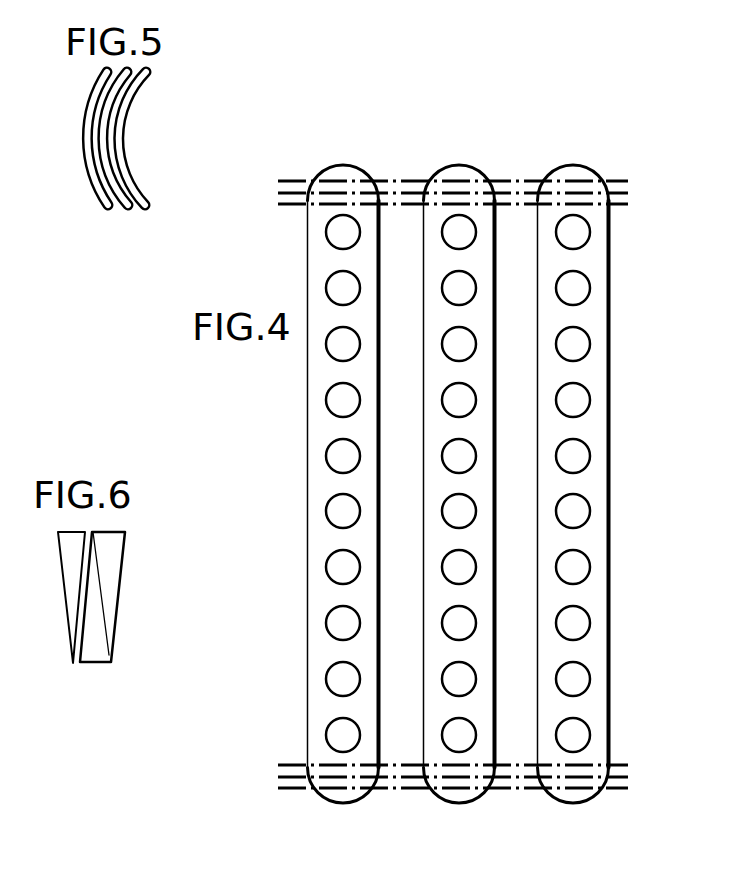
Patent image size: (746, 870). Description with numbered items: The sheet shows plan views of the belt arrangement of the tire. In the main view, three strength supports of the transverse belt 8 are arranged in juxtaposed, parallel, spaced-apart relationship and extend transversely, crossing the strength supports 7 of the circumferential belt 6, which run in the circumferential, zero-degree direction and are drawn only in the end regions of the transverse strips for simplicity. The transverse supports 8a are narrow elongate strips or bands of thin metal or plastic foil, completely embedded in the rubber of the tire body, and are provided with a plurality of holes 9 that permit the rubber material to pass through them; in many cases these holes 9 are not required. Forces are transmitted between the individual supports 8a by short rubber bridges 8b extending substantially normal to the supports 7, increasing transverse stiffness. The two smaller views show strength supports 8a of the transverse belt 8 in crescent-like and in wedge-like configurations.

In FIG. 4, the circumferential belt 6 is at (630, 724).
In FIG. 4, the strength supports of the circumferential belt 7 is at (403, 193).
In FIG. 4, the transverse belt 8 is at (618, 510).
In FIG. 5, the transverse belt 8 is at (112, 170).
In FIG. 6, the transverse belt 8 is at (126, 625).
In FIG. 4, the strength supports of the transverse belt 8a is at (597, 422).
In FIG. 5, the strength supports of the transverse belt 8a is at (123, 108).
In FIG. 6, the strength supports of the transverse belt 8a is at (112, 557).
In FIG. 4, the rubber bridges 8b is at (518, 230).
In FIG. 5, the rubber bridges 8b is at (137, 212).
In FIG. 6, the rubber bridges 8b is at (108, 662).
In FIG. 4, the holes 9 is at (577, 342).